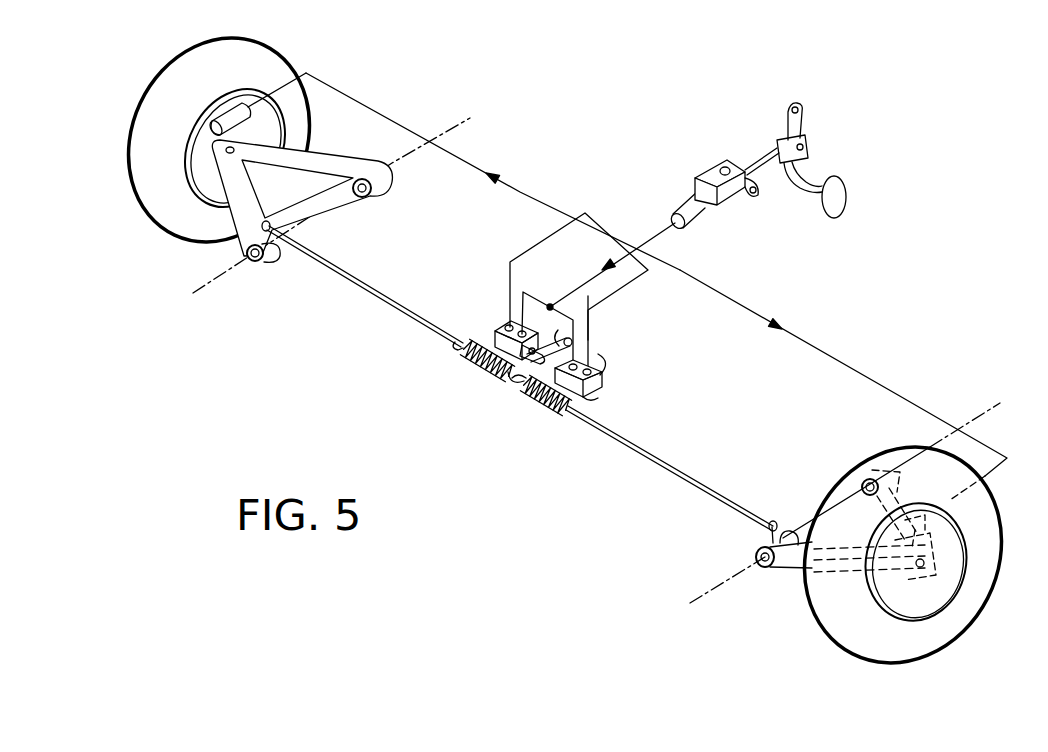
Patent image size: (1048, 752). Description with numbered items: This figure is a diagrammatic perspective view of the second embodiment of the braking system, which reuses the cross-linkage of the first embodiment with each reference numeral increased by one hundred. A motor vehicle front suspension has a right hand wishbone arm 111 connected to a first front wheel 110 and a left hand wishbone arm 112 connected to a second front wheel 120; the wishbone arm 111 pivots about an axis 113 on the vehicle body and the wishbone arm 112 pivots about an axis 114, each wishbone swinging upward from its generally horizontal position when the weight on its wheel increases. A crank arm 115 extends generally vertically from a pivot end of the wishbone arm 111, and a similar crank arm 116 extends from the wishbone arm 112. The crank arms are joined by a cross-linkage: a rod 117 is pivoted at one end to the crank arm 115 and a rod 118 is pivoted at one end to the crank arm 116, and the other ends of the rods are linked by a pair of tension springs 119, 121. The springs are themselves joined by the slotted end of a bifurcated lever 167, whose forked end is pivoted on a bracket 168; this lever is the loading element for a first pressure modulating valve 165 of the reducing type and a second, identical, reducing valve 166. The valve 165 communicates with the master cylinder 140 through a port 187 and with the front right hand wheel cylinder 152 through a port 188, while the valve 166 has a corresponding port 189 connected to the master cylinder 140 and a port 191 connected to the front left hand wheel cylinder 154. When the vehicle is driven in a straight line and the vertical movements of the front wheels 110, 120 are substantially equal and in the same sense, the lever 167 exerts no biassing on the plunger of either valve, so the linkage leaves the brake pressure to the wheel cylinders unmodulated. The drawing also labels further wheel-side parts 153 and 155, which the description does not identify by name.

The first front wheel 110 is at (273, 62).
The front right hand wheel cylinder 152 is at (223, 110).
The pivot axis of wishbone arm 111 113 is at (433, 143).
The right hand wishbone arm 111 is at (320, 164).
The master cylinder 140 is at (698, 190).
The tire 153 is at (205, 236).
The crank arm 115 is at (266, 264).
The rod 117 is at (384, 310).
The second reducing valve 166 is at (492, 321).
The bifurcated lever 167 is at (490, 330).
The port 189 is at (506, 322).
The port 191 is at (543, 318).
The bracket 168 is at (582, 328).
The port 187 is at (598, 372).
The first pressure modulating valve 165 is at (606, 382).
The port 188 is at (590, 398).
The tension spring 119 is at (468, 372).
The tension spring 121 is at (540, 411).
The rod 118 is at (664, 478).
The crank arm 116 is at (776, 524).
The pivot axis of wishbone arm 112 114 is at (967, 432).
The front left hand wheel cylinder 154 is at (997, 513).
The left hand wishbone arm 112 is at (800, 566).
The second front wheel 120 is at (983, 580).
The rim 155 is at (932, 592).